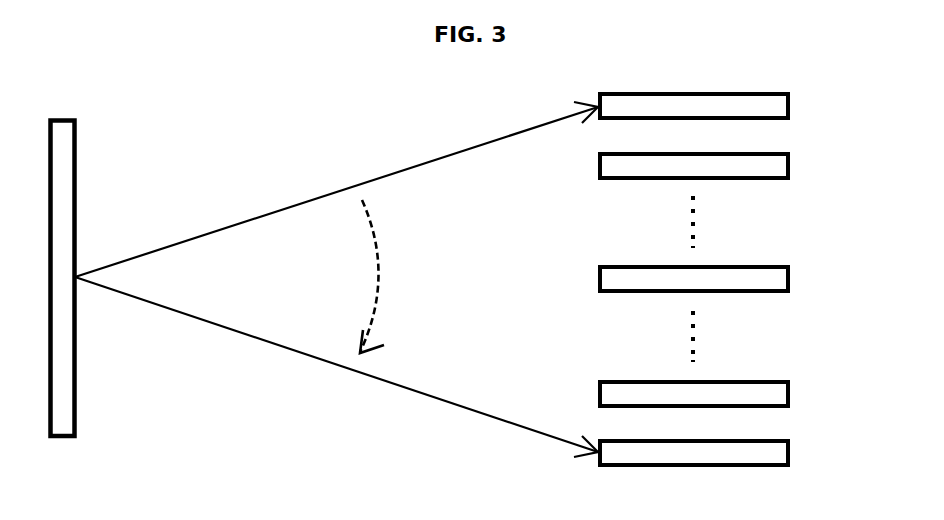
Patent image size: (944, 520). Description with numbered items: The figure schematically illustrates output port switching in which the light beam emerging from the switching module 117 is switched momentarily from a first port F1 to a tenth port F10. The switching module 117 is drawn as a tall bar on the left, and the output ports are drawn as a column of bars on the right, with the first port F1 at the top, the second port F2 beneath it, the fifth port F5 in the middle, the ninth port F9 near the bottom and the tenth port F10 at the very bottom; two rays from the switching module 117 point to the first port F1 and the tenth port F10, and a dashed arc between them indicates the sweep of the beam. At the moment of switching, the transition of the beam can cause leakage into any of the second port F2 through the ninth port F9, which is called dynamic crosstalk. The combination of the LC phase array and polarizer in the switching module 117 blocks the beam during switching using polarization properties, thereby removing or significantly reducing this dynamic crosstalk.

The switching module 117 is at (80, 158).
The first port F1 is at (730, 112).
The Port 2 F2 is at (730, 170).
The Port 5 F5 is at (730, 283).
The Port 9 F9 is at (730, 392).
The tenth port F10 is at (738, 455).